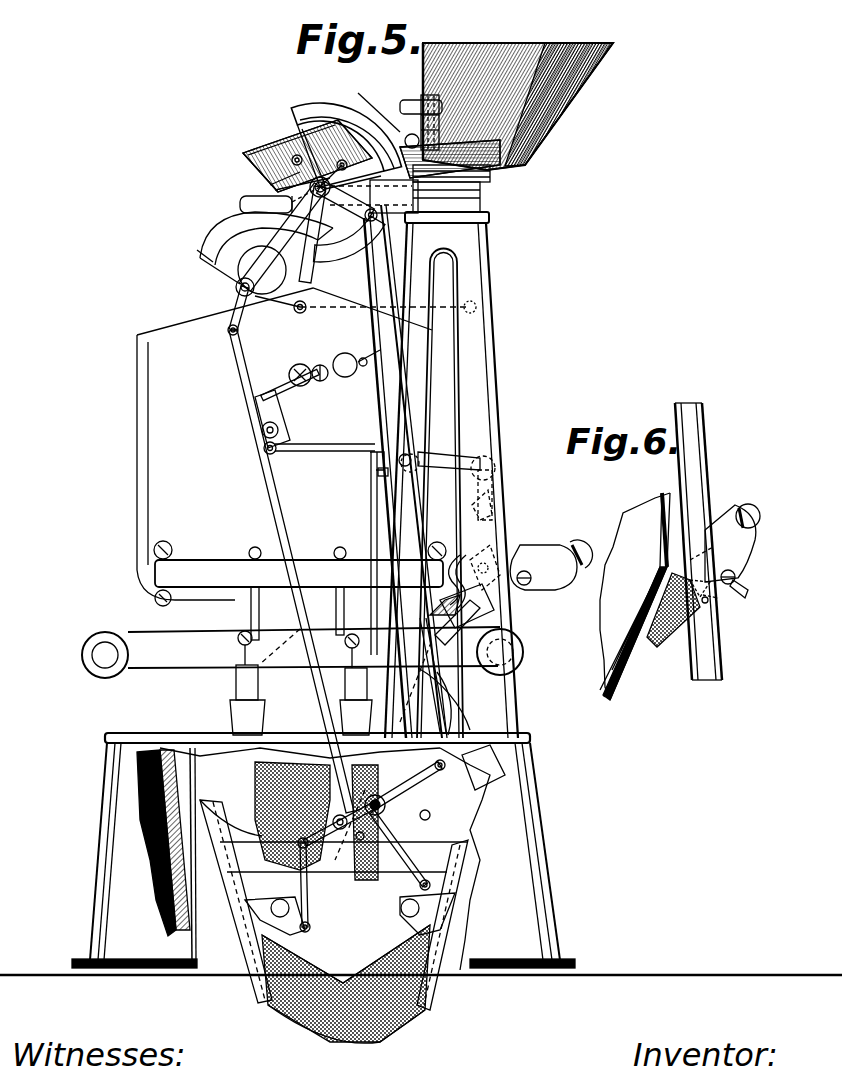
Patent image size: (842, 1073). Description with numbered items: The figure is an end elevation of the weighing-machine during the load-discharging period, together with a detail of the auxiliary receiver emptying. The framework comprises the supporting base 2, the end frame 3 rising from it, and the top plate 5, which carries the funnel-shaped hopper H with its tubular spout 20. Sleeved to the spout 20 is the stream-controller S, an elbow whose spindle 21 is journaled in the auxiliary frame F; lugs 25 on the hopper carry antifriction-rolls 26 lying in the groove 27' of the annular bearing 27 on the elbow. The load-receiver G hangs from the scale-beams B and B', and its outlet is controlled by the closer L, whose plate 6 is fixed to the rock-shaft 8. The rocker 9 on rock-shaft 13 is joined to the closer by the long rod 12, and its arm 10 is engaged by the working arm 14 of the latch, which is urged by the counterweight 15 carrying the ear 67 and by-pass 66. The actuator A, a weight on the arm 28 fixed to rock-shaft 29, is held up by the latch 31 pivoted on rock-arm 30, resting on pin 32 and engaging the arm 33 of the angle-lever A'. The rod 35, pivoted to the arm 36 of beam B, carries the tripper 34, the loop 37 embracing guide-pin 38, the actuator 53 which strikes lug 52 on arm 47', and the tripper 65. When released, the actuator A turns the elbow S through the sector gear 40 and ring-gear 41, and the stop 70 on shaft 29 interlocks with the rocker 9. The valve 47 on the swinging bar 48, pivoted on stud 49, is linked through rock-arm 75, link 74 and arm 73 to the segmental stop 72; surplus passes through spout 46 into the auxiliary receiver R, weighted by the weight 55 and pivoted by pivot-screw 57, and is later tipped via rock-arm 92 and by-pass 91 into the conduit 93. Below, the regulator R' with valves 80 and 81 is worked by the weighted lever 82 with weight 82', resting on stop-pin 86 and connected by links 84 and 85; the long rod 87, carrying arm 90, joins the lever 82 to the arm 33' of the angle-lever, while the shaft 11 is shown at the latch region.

In FIG. 5, the hopper H is at (548, 44).
In FIG. 5, the tubular spout 20 is at (497, 176).
In FIG. 5, the top plate 5 is at (483, 195).
In FIG. 5, the end frame 3 is at (478, 280).
In FIG. 6, the end frame 3 is at (702, 470).
In FIG. 5, the supporting base 2 is at (113, 807).
In FIG. 5, the regulator R' is at (334, 836).
In FIG. 5, the regulator valve 80 is at (257, 938).
In FIG. 5, the regulator valve 81 is at (440, 940).
In FIG. 5, the link 84 is at (300, 878).
In FIG. 5, the link 85 is at (407, 852).
In FIG. 5, the closer L is at (382, 777).
In FIG. 5, the lever 82 is at (413, 784).
In FIG. 5, the weight 82' is at (483, 777).
In FIG. 5, the stop-pin 86 is at (430, 820).
In FIG. 5, the load-receiver G is at (140, 420).
In FIG. 6, the load-receiver G is at (635, 596).
In FIG. 5, the scale-beam arm 36 is at (262, 628).
In FIG. 5, the scale-beam B is at (291, 652).
In FIG. 5, the scale-beam B' is at (486, 652).
In FIG. 5, the closer plate 6 is at (442, 700).
In FIG. 5, the rock-shaft 8 is at (432, 714).
In FIG. 5, the long rod 12 is at (276, 510).
In FIG. 5, the thrust-rod 35 is at (370, 490).
In FIG. 5, the long rod 87 is at (398, 407).
In FIG. 5, the tripper 65 is at (372, 365).
In FIG. 5, the working arm 14 is at (285, 393).
In FIG. 5, the stop 72 is at (262, 420).
In FIG. 5, the arm 73 is at (262, 449).
In FIG. 5, the link 74 is at (300, 446).
In FIG. 5, the disk 11 is at (318, 385).
In FIG. 5, the by-pass 66 is at (325, 365).
In FIG. 5, the counterweight 15 is at (338, 360).
In FIG. 5, the ear 67 is at (360, 372).
In FIG. 5, the rock-arm 75 is at (404, 458).
In FIG. 5, the projecting stud 49 is at (402, 462).
In FIG. 5, the arm 47' is at (449, 444).
In FIG. 5, the transverse swinging bar 48 is at (495, 465).
In FIG. 5, the actuator 53 is at (375, 462).
In FIG. 5, the lug 52 is at (378, 472).
In FIG. 5, the valve 47 is at (498, 468).
In FIG. 5, the spout 46 is at (490, 502).
In FIG. 5, the arm 90 is at (478, 545).
In FIG. 5, the rock-arm 92 is at (468, 570).
In FIG. 6, the rock-arm 92 is at (738, 590).
In FIG. 5, the auxiliary receiver R is at (543, 564).
In FIG. 6, the auxiliary receiver R is at (723, 551).
In FIG. 5, the weight 55 is at (585, 546).
In FIG. 6, the weight 55 is at (756, 510).
In FIG. 5, the pivot-screw 57 is at (530, 577).
In FIG. 5, the by-pass 91 is at (450, 620).
In FIG. 6, the by-pass 91 is at (695, 624).
In FIG. 5, the conduit 93 is at (470, 616).
In FIG. 6, the conduit 93 is at (650, 650).
In FIG. 5, the stream-controller S is at (262, 150).
In FIG. 5, the rock-arm 30 is at (250, 170).
In FIG. 5, the pin 32 is at (250, 160).
In FIG. 5, the arm 33 is at (259, 174).
In FIG. 5, the angle-lever A' is at (278, 188).
In FIG. 5, the latch 31 is at (292, 157).
In FIG. 5, the arm 33' is at (318, 134).
In FIG. 5, the driving-gear 40 is at (335, 106).
In FIG. 5, the tripper 34 is at (375, 126).
In FIG. 5, the bevel ring-gear 41 is at (385, 114).
In FIG. 5, the antifriction-roll 26 is at (405, 105).
In FIG. 5, the lug 25 is at (425, 98).
In FIG. 5, the groove 27' is at (449, 105).
In FIG. 5, the annular bearing 27 is at (447, 114).
In FIG. 5, the longitudinal loop 37 is at (374, 195).
In FIG. 5, the arm 10 is at (296, 272).
In FIG. 5, the rock-shaft 13 is at (237, 288).
In FIG. 5, the stop 70 is at (340, 262).
In FIG. 5, the auxiliary frame F is at (350, 221).
In FIG. 5, the guide-pin 38 is at (376, 222).
In FIG. 5, the actuator A is at (263, 253).
In FIG. 5, the arm 28 is at (264, 236).
In FIG. 5, the rocker 9 is at (200, 250).
In FIG. 5, the spindle 21 is at (240, 210).
In FIG. 5, the rock-shaft 29 is at (279, 205).